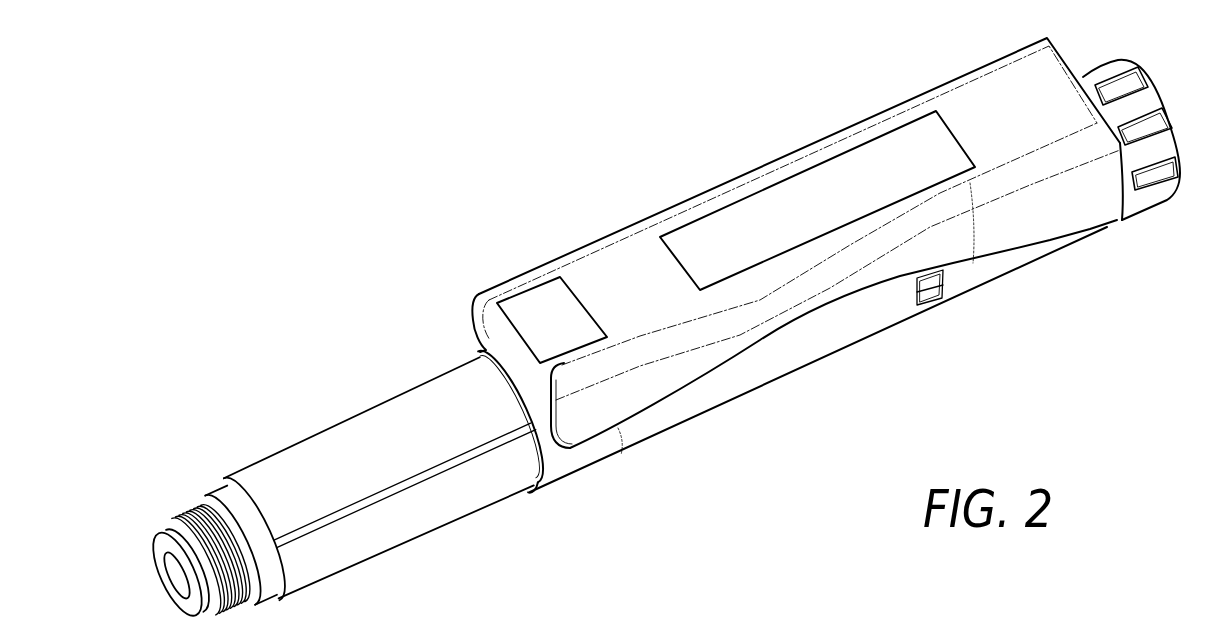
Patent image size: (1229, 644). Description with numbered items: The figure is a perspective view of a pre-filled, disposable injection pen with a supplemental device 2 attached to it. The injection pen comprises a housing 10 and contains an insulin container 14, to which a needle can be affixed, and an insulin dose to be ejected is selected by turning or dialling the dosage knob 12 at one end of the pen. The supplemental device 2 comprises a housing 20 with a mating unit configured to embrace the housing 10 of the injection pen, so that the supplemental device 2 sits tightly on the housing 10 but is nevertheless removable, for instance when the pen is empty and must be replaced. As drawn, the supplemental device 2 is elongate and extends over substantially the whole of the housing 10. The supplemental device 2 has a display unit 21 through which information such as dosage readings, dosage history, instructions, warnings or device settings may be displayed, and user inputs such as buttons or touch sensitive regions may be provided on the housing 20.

The supplemental device 2 is at (1002, 82).
The housing 10 is at (848, 327).
The dosage knob 12 is at (1147, 102).
The insulin container 14 is at (333, 443).
The housing 20 is at (1092, 220).
The display unit 21 is at (807, 183).